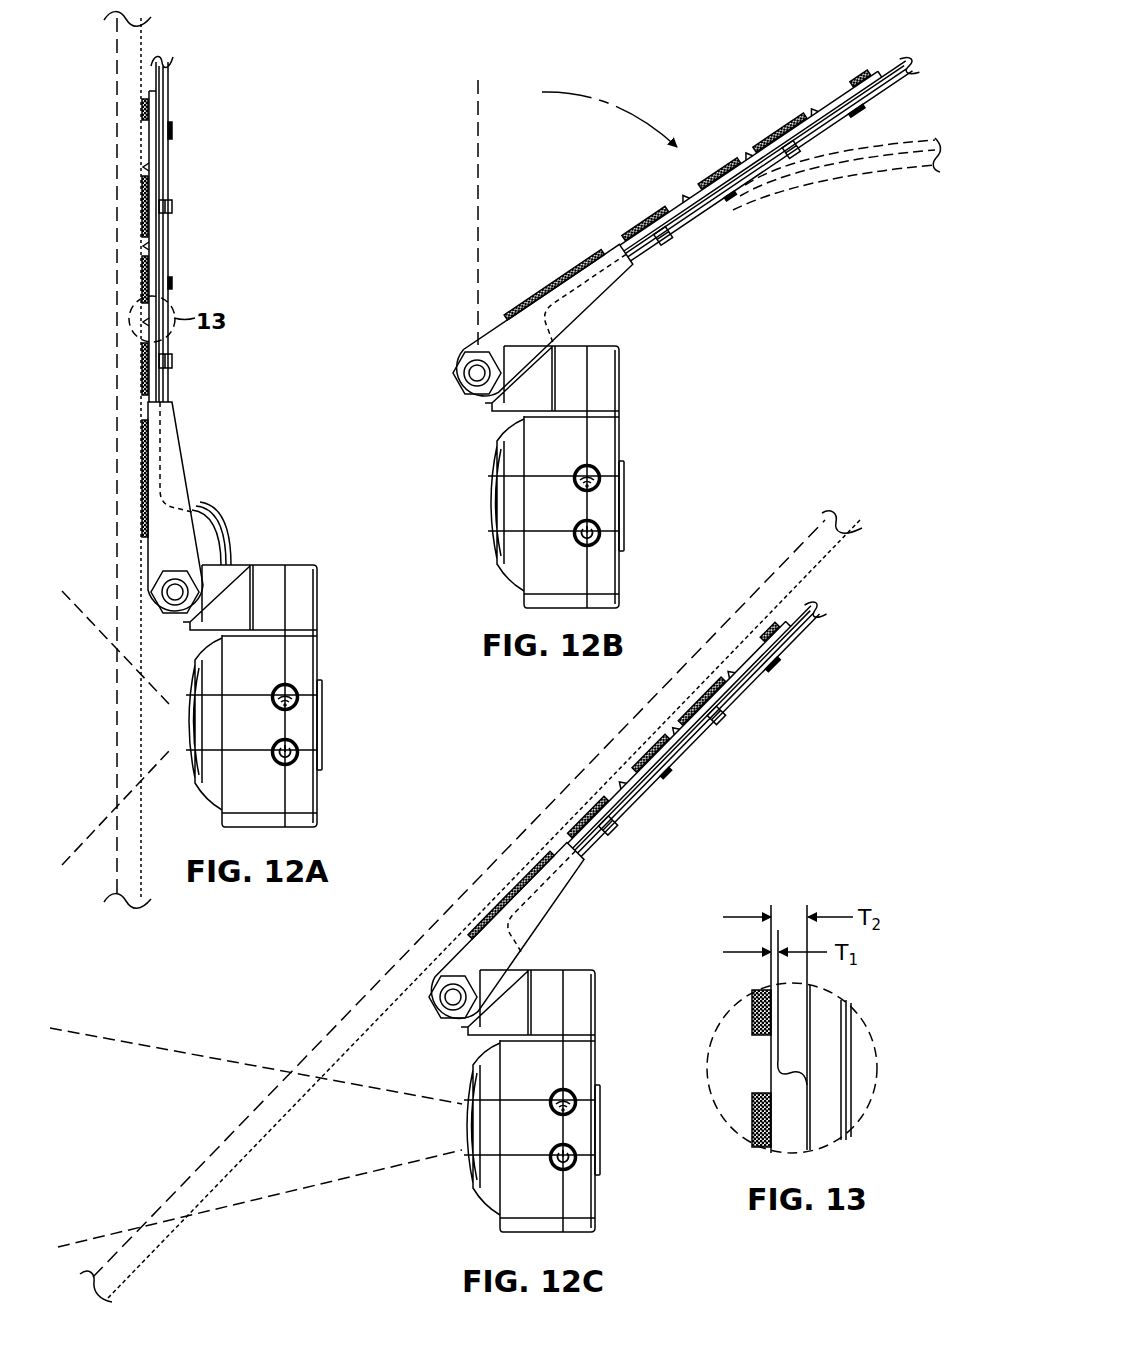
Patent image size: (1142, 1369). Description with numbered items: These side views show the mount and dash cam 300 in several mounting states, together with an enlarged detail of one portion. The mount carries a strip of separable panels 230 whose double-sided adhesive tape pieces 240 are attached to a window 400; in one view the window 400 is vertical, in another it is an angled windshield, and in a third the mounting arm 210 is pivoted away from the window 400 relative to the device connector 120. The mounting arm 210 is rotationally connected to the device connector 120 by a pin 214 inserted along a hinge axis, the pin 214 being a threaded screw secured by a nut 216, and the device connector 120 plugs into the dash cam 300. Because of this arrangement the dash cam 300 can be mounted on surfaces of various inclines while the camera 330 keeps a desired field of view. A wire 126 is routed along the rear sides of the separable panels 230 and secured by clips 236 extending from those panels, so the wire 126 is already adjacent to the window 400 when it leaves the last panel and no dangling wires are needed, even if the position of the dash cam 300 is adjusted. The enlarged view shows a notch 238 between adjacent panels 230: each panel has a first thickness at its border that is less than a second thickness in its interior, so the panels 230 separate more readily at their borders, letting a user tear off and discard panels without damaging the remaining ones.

In FIG. 12A, the device connector 120 is at (235, 598).
In FIG. 12B, the device connector 120 is at (498, 412).
In FIG. 12C, the device connector 120 is at (488, 1023).
In FIG. 12A, the wire 126 is at (163, 84).
In FIG. 12B, the wire 126 is at (893, 68).
In FIG. 12C, the wire 126 is at (647, 774).
In FIG. 13, the wire 126 is at (842, 1048).
In FIG. 12A, the mounting arm 210 is at (165, 529).
In FIG. 12B, the mounting arm 210 is at (503, 333).
In FIG. 12C, the mounting arm 210 is at (473, 955).
In FIG. 12A, the pin 214 is at (173, 591).
In FIG. 12B, the pin 214 is at (470, 382).
In FIG. 12C, the pin 214 is at (449, 997).
In FIG. 12A, the nut 216 is at (178, 576).
In FIG. 12B, the nut 216 is at (470, 367).
In FIG. 12C, the nut 216 is at (445, 980).
In FIG. 12A, the separable panels 230 is at (151, 188).
In FIG. 13, the separable panels 230 is at (793, 1018).
In FIG. 12A, the clip 236 is at (173, 208).
In FIG. 13, the notch 238 is at (798, 1070).
In FIG. 12A, the double-sided adhesive tape pieces 240 is at (142, 181).
In FIG. 13, the double-sided adhesive tape pieces 240 is at (752, 1112).
In FIG. 12A, the dash cam 300 is at (296, 789).
In FIG. 12B, the dash cam 300 is at (603, 572).
In FIG. 12C, the dash cam 300 is at (577, 1195).
In FIG. 12A, the camera 330 is at (169, 727).
In FIG. 12B, the camera 330 is at (480, 510).
In FIG. 12C, the camera 330 is at (453, 1128).
In FIG. 12A, the window 400 is at (117, 88).
In FIG. 12C, the window 400 is at (531, 831).